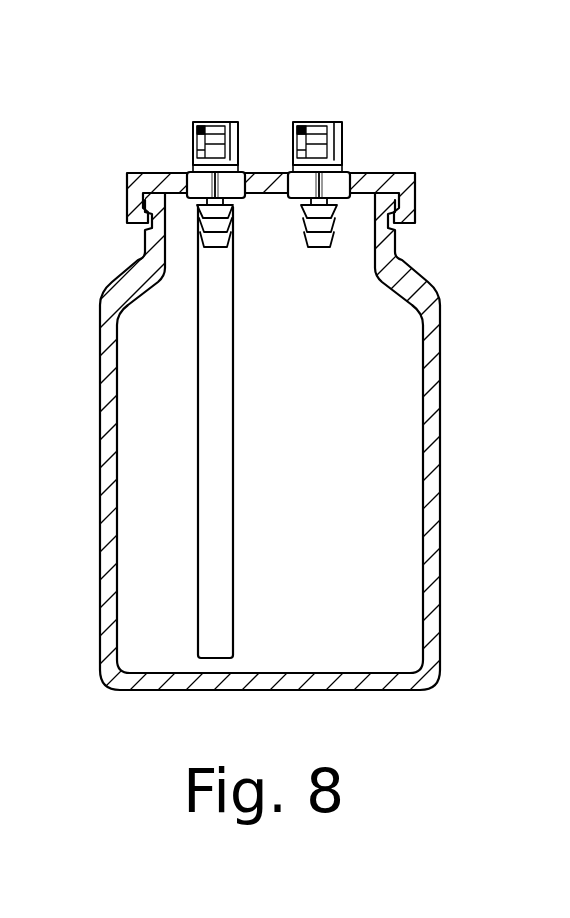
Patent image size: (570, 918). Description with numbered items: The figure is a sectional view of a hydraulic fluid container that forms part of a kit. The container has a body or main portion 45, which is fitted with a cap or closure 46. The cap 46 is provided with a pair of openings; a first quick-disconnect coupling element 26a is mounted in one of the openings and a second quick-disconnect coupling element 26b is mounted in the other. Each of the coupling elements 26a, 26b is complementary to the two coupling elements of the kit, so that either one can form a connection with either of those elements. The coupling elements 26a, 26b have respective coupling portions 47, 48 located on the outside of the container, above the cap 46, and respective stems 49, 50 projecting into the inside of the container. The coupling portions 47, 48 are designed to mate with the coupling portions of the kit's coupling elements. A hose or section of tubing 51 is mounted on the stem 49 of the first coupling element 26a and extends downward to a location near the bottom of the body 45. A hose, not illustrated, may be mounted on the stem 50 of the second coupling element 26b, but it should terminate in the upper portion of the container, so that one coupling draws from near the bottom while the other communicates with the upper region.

The first quick-disconnect coupling element 26a is at (174, 166).
The second quick-disconnect coupling element 26b is at (377, 180).
The body 45 is at (438, 422).
The cap 46 is at (417, 192).
The coupling portion 47 is at (193, 131).
The coupling portion 48 is at (342, 131).
The stem 49 is at (228, 247).
The stem 50 is at (326, 248).
The section of tubing 51 is at (233, 452).